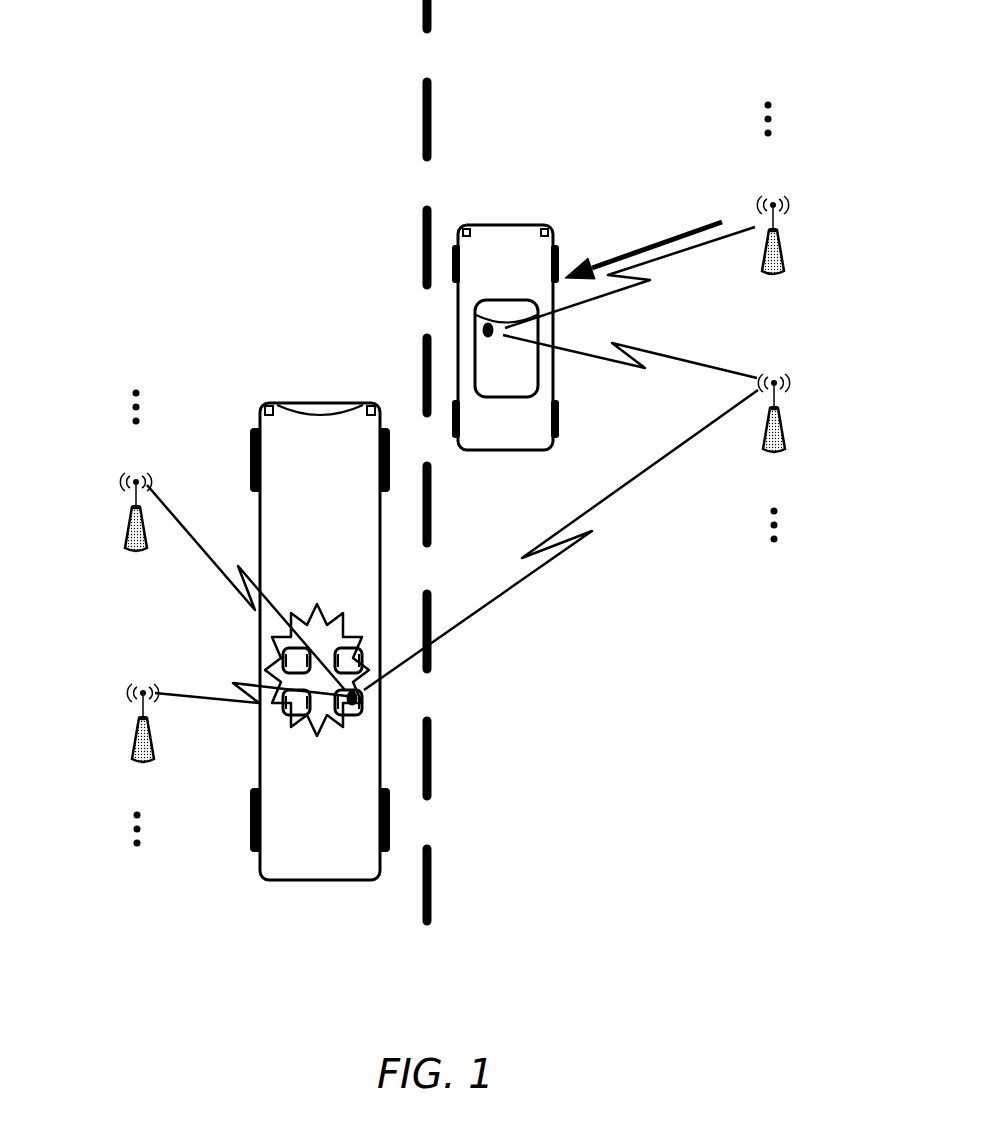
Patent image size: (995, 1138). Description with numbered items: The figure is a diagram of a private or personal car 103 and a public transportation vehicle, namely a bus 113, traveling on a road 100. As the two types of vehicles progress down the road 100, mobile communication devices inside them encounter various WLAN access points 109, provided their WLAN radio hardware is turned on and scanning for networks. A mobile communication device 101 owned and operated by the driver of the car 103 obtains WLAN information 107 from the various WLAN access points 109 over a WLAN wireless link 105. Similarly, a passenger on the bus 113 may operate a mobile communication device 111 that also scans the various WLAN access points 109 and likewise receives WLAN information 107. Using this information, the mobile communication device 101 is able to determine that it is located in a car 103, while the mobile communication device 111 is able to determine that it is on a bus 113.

The road 100 is at (502, 128).
The mobile communication device 101 is at (486, 328).
The private or personal car 103 is at (552, 240).
The WLAN wireless link 105 is at (638, 285).
The WLAN information 107 is at (662, 240).
The WLAN access points 109 is at (785, 245).
The mobile communication device 111 is at (363, 697).
The bus 113 is at (260, 528).